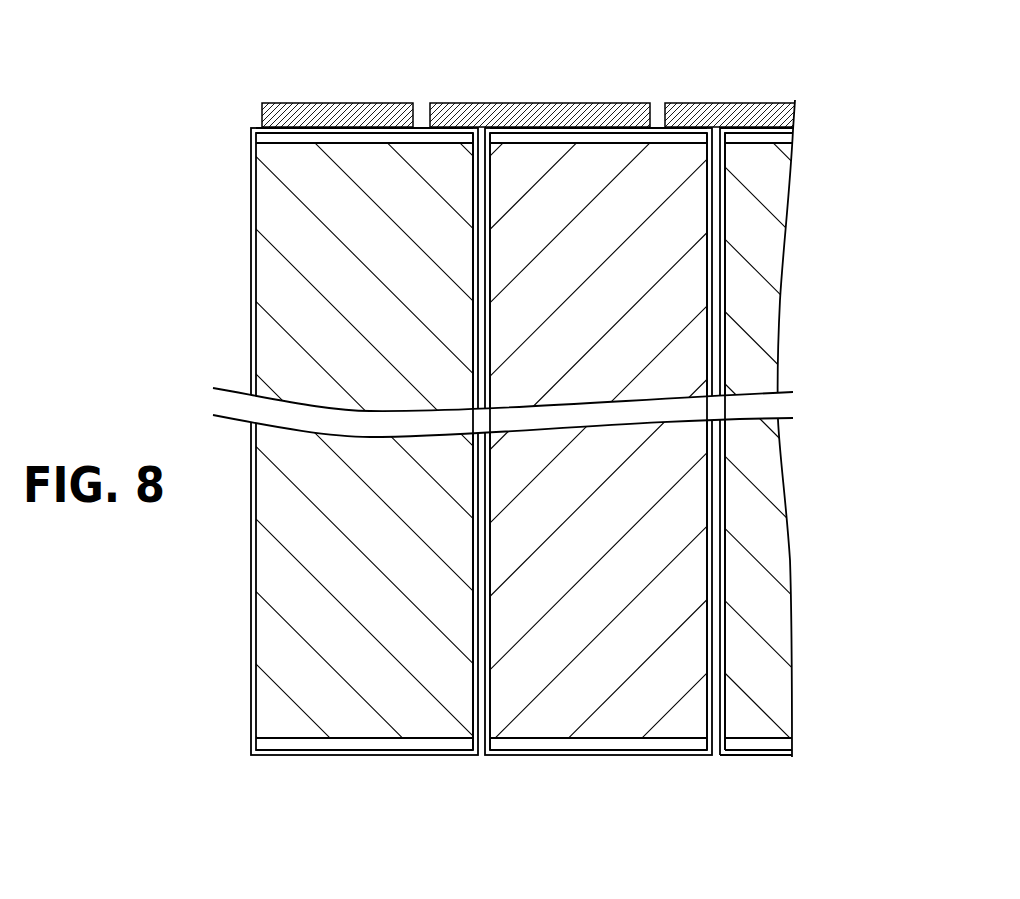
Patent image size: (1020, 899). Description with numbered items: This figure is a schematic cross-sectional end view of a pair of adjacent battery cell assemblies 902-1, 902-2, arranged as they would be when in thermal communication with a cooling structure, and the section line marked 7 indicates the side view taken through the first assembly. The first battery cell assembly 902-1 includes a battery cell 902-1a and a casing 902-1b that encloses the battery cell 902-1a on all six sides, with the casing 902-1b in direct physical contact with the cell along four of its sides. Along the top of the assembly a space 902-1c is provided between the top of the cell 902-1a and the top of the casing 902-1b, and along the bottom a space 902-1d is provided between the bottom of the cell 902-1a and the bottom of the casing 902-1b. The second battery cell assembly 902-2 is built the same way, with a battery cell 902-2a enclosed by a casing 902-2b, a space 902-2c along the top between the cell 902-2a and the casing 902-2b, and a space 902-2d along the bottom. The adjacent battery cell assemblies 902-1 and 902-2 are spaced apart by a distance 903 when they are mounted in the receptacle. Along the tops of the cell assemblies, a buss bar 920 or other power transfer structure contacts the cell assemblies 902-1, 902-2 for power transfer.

The battery cell assembly 902-1 is at (251, 126).
The battery cell 902-1a is at (323, 349).
The casing 902-1b is at (355, 130).
The space 902-1c is at (422, 138).
The space 902-1d is at (345, 745).
The battery cell assembly 902-2 is at (715, 122).
The battery cell 902-2a is at (680, 235).
The casing 902-2b is at (549, 128).
The space 902-2c is at (655, 134).
The space 902-2d is at (665, 742).
The distance 903 is at (483, 262).
The buss bar 920 is at (493, 106).
The section line for FIG. 7 is at (312, 420).